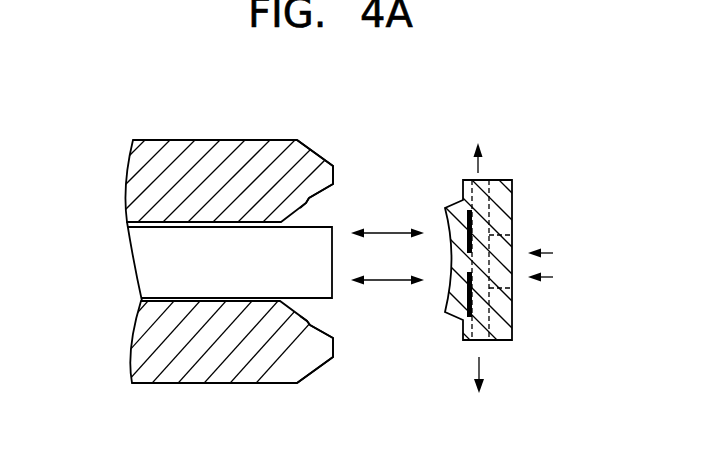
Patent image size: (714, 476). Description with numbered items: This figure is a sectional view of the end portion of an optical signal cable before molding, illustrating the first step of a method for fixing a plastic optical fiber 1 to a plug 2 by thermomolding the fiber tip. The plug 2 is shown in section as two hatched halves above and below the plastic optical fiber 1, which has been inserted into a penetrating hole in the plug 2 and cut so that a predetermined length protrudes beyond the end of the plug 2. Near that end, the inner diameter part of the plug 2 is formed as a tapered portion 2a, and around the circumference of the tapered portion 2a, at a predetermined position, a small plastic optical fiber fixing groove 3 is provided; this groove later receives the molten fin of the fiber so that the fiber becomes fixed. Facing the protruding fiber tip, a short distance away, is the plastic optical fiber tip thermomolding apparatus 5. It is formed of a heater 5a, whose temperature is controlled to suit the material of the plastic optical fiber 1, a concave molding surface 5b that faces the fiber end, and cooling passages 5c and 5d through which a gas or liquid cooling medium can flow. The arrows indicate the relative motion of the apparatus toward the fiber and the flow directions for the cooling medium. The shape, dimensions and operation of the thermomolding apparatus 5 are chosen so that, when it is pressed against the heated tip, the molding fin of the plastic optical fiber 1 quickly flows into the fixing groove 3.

The plastic optical fiber 1 is at (158, 263).
The plug 2 is at (235, 170).
The tapered portion 2a is at (323, 193).
The plastic optical fiber fixing groove 3 is at (308, 202).
The plastic optical fiber tip thermomolding apparatus 5 is at (450, 166).
The heater 5a is at (475, 230).
The concave molding surface 5b is at (452, 255).
The cooling passage 5c is at (492, 267).
The cooling passage 5d is at (503, 179).